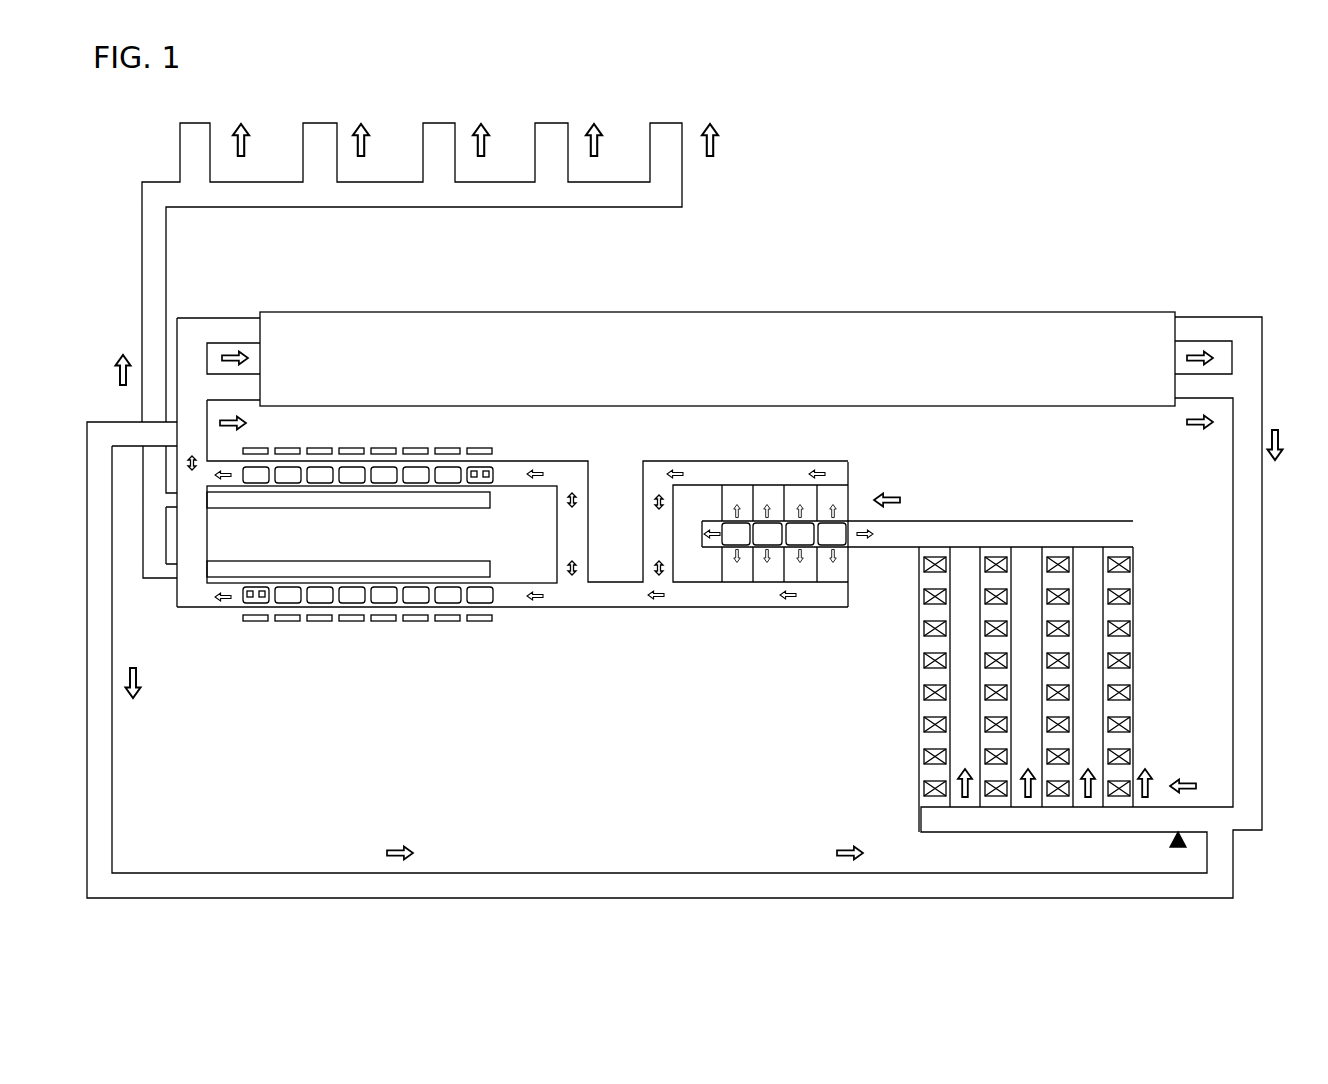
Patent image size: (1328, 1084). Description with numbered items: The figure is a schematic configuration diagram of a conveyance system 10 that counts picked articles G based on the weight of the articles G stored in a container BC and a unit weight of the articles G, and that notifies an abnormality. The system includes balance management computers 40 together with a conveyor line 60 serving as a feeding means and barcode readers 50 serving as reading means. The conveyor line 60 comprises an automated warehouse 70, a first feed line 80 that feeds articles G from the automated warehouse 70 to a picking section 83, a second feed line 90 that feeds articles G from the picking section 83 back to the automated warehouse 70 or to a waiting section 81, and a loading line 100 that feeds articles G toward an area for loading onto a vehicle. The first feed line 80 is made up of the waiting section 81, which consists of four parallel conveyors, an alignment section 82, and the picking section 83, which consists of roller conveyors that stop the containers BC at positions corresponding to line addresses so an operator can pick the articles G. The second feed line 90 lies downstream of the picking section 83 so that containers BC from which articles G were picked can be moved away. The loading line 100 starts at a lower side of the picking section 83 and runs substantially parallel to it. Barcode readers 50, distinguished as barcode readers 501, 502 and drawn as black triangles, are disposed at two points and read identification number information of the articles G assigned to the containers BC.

The conveyance system 10 is at (1032, 222).
The balance management computers 40 is at (483, 450).
The barcode readers 50 is at (959, 731).
The barcode reader 501 is at (1178, 845).
The barcode reader 502 is at (897, 556).
The conveyor line 60 is at (630, 440).
The automated warehouse 70 is at (848, 312).
The first feed line 80 is at (1263, 700).
The waiting section 81 is at (1158, 603).
The alignment section 82 is at (782, 620).
The picking section 83 is at (512, 582).
The second feed line 90 is at (178, 318).
The loading line 100 is at (522, 208).
The articles G is at (472, 480).
The container BC is at (495, 470).